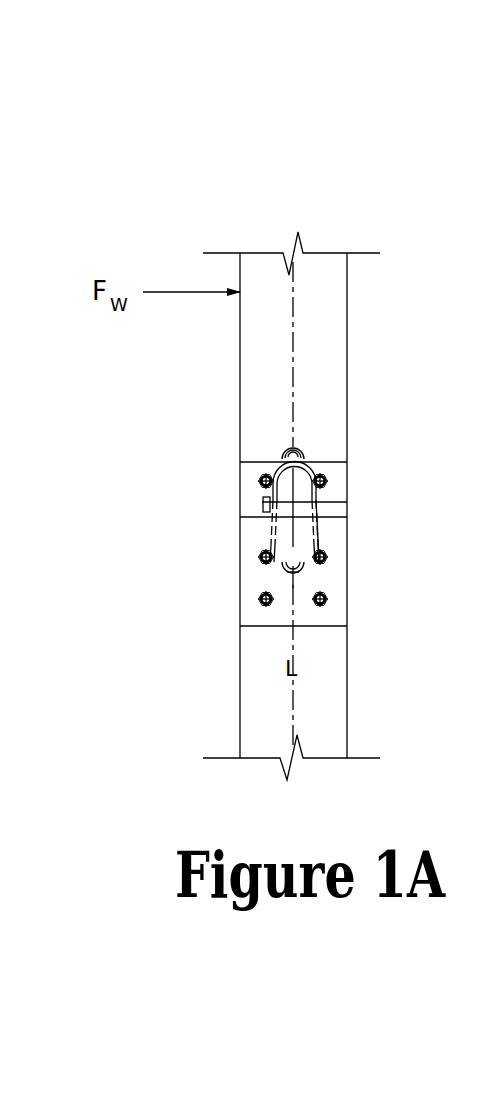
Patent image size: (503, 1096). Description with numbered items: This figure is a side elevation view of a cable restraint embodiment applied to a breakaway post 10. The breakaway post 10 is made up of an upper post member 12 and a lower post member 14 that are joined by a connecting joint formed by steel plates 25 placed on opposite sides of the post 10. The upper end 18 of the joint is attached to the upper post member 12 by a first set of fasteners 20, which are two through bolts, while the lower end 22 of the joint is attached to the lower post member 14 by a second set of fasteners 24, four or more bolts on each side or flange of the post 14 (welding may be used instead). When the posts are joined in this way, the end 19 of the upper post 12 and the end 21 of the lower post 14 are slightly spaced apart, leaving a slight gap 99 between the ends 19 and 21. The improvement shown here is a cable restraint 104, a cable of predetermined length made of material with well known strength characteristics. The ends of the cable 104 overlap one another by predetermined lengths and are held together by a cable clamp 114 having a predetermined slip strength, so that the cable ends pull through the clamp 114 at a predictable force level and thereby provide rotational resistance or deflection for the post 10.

The breakaway post 10 is at (251, 505).
The upper post member 12 is at (335, 357).
The lower post member 14 is at (317, 730).
The upper end 18 is at (214, 461).
The end 19 is at (332, 485).
The first set of fasteners 20 is at (220, 419).
The end 21 is at (263, 535).
The lower end 22 is at (343, 647).
The second set of fasteners 24 is at (275, 591).
The steel plates 25 is at (397, 554).
The gap 99 is at (350, 525).
The cable restraint 104 is at (348, 436).
The cable clamp 114 is at (207, 494).